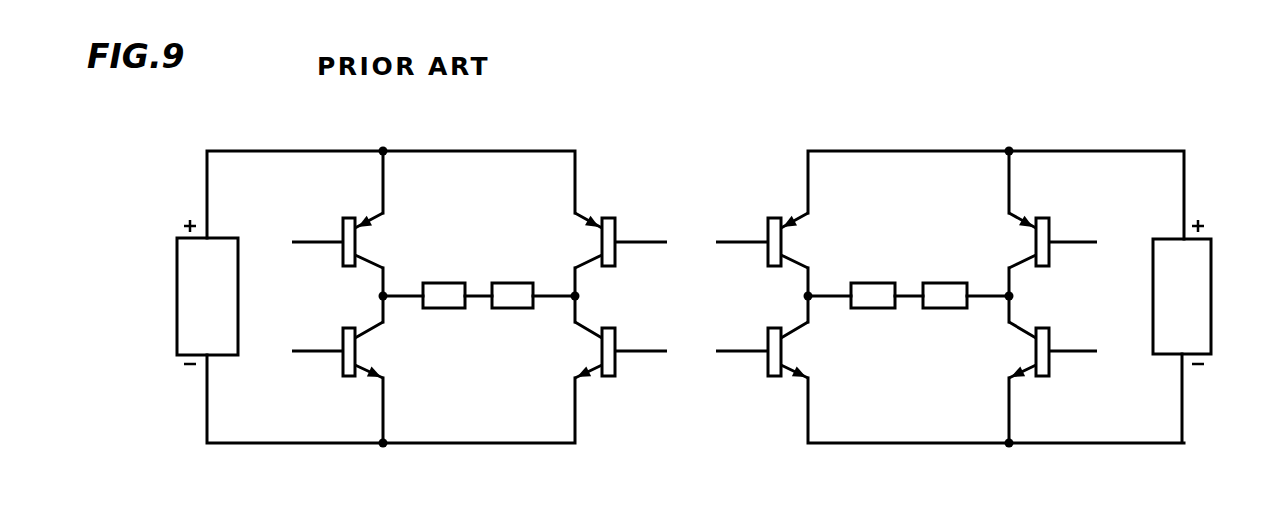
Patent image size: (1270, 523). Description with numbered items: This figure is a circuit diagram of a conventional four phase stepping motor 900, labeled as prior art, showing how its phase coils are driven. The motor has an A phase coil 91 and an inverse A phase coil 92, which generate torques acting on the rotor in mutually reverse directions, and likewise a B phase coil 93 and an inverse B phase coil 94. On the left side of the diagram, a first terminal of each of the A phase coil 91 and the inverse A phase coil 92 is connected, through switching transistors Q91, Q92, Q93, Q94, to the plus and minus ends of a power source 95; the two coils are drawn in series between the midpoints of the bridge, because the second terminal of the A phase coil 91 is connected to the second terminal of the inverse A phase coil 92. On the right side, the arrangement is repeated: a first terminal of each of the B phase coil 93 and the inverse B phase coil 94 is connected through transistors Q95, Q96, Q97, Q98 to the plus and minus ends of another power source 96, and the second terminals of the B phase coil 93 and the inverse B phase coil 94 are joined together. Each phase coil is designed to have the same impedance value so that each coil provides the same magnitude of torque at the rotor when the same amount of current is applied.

The four phase stepping motor 900 is at (693, 457).
The A phase coil 91 is at (440, 283).
The inverse A phase coil 92 is at (513, 283).
The B phase coil 93 is at (872, 283).
The inverse B phase coil 94 is at (948, 283).
The power source 95 is at (177, 263).
The power source 96 is at (1211, 264).
The transistor Q91 is at (337, 229).
The transistor Q92 is at (337, 340).
The transistor Q93 is at (621, 229).
The transistor Q94 is at (621, 340).
The transistor Q95 is at (762, 229).
The transistor Q96 is at (762, 340).
The transistor Q97 is at (1053, 229).
The transistor Q98 is at (1053, 340).